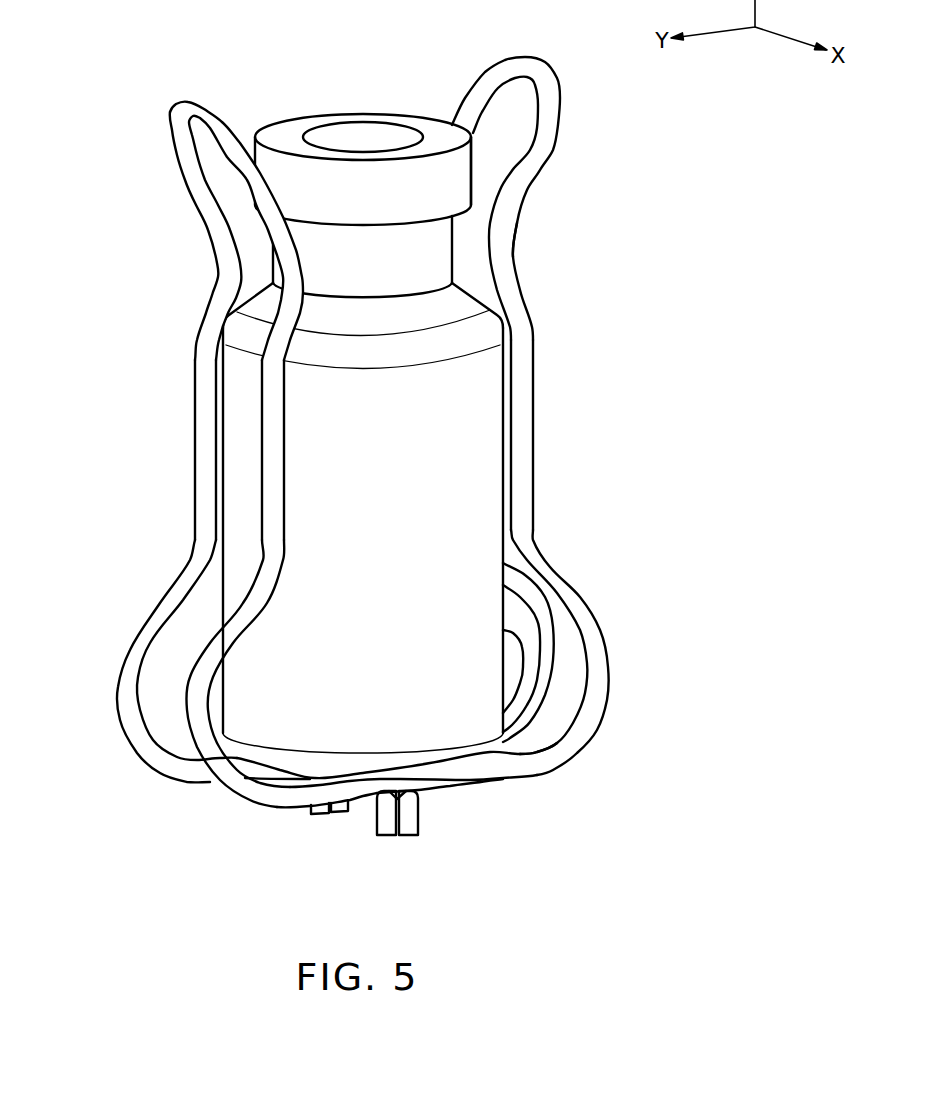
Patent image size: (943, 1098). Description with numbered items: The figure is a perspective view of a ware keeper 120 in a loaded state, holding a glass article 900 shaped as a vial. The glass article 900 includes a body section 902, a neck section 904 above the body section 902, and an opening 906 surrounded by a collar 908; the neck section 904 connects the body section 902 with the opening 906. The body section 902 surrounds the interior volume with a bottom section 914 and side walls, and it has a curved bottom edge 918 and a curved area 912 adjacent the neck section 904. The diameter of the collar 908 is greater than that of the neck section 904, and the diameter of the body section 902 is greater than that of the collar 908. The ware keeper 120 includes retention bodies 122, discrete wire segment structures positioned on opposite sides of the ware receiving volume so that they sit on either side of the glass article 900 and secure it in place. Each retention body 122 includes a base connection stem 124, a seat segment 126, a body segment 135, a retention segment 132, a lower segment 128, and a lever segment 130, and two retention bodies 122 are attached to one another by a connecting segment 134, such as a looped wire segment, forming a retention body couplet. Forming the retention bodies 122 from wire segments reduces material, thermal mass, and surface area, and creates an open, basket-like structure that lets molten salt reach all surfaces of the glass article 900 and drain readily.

The ware keeper 120 is at (365, 482).
The retention body 122 is at (195, 487).
The base connection stem 124 is at (390, 835).
The seat segment 126 is at (480, 781).
The lower segment 128 is at (610, 663).
The lever segment 130 is at (194, 189).
The retention segment 132 is at (515, 238).
The connecting segment 134 is at (187, 102).
The body segment 135 is at (195, 410).
The glass article 900 is at (402, 442).
The body section 902 is at (505, 628).
The neck section 904 is at (455, 243).
The opening 906 is at (333, 134).
The collar 908 is at (488, 154).
The curved area 912 is at (240, 280).
The bottom section 914 is at (363, 796).
The curved bottom edge 918 is at (523, 753).